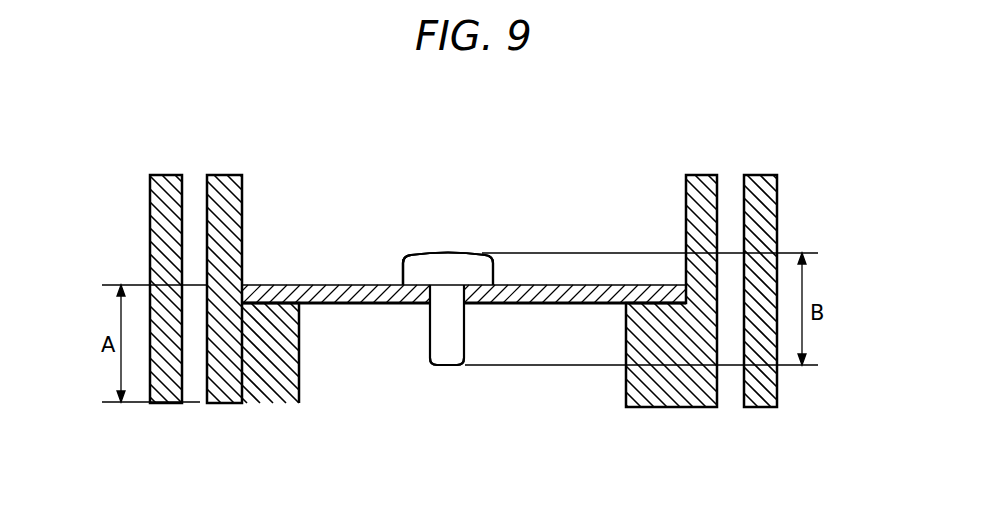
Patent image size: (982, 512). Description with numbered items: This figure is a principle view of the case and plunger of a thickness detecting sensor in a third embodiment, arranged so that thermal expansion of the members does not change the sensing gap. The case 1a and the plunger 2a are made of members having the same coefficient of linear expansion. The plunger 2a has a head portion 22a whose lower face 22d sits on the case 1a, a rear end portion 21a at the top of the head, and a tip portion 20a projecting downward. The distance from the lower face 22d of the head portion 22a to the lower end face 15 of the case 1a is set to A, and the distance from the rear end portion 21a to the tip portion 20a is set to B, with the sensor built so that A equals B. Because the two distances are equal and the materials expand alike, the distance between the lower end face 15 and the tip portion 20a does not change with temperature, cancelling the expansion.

The case 1a is at (225, 168).
The lower end face 15 is at (252, 404).
The lower face 22d is at (402, 287).
The plunger 2a is at (417, 341).
The rear end portion 21a is at (448, 252).
The head portion 22a is at (422, 258).
The tip portion 20a is at (443, 367).